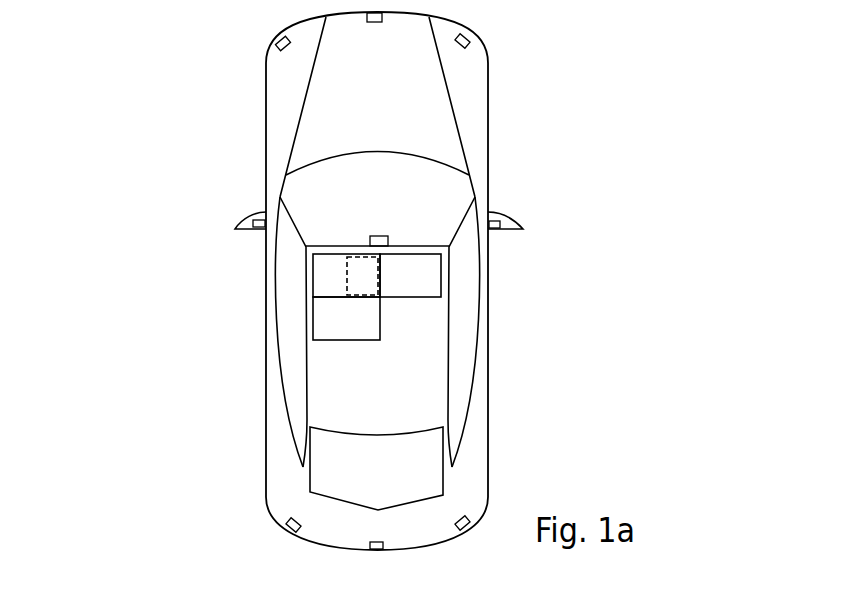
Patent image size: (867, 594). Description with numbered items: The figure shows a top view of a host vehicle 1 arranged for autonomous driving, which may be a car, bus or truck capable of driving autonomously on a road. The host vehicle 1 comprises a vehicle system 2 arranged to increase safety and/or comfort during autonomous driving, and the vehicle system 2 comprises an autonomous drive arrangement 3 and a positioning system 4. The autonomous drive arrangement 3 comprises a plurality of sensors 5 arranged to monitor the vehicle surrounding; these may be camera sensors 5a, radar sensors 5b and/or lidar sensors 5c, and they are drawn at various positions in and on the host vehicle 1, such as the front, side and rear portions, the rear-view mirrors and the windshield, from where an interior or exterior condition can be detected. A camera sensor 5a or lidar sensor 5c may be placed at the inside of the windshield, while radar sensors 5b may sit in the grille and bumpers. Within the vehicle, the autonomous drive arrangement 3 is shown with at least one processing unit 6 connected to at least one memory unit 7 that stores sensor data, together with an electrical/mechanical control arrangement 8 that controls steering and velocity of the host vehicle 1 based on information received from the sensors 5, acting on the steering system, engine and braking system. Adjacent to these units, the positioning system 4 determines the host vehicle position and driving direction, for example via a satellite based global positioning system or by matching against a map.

The host vehicle 1 is at (155, 60).
The vehicle system 2 is at (113, 180).
The autonomous drive arrangement 3 is at (243, 303).
The positioning system 4 is at (338, 326).
The sensors 5 is at (467, 38).
The camera sensor 5a is at (376, 222).
The radar sensor 5b is at (374, 51).
The lidar sensor 5c is at (373, 22).
The processing unit 6 is at (323, 286).
The memory unit 7 is at (356, 286).
The control arrangement 8 is at (405, 286).